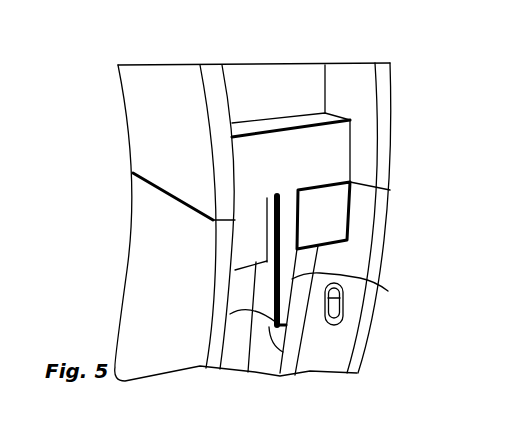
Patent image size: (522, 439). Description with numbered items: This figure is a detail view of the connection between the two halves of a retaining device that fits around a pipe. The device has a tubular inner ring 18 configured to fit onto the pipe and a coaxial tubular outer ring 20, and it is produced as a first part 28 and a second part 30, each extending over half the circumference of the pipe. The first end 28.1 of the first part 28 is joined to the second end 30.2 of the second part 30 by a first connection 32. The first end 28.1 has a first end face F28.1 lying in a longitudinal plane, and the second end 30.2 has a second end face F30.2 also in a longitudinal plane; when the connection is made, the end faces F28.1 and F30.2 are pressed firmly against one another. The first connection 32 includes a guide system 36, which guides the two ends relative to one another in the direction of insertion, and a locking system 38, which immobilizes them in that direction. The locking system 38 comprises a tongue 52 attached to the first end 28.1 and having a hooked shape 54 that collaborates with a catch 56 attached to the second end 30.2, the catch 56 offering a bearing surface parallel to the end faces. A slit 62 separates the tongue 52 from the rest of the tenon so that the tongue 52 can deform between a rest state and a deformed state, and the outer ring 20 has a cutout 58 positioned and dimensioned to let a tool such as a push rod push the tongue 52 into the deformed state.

The inner ring 18 is at (147, 118).
The outer ring 20 is at (392, 80).
The first part 28 is at (294, 90).
The first end 28.1 is at (395, 158).
The first end face F28.1 is at (315, 184).
The second part 30 is at (363, 370).
The second end 30.2 is at (388, 233).
The second end face F30.2 is at (351, 182).
The first connection 32 is at (123, 189).
The guide system 36 is at (244, 260).
The locking system 38 is at (265, 330).
The tongue 52 is at (285, 223).
The hooked shape 54 is at (303, 249).
The catch 56 is at (307, 245).
The cutout 58 is at (338, 307).
The slit 62 is at (267, 222).